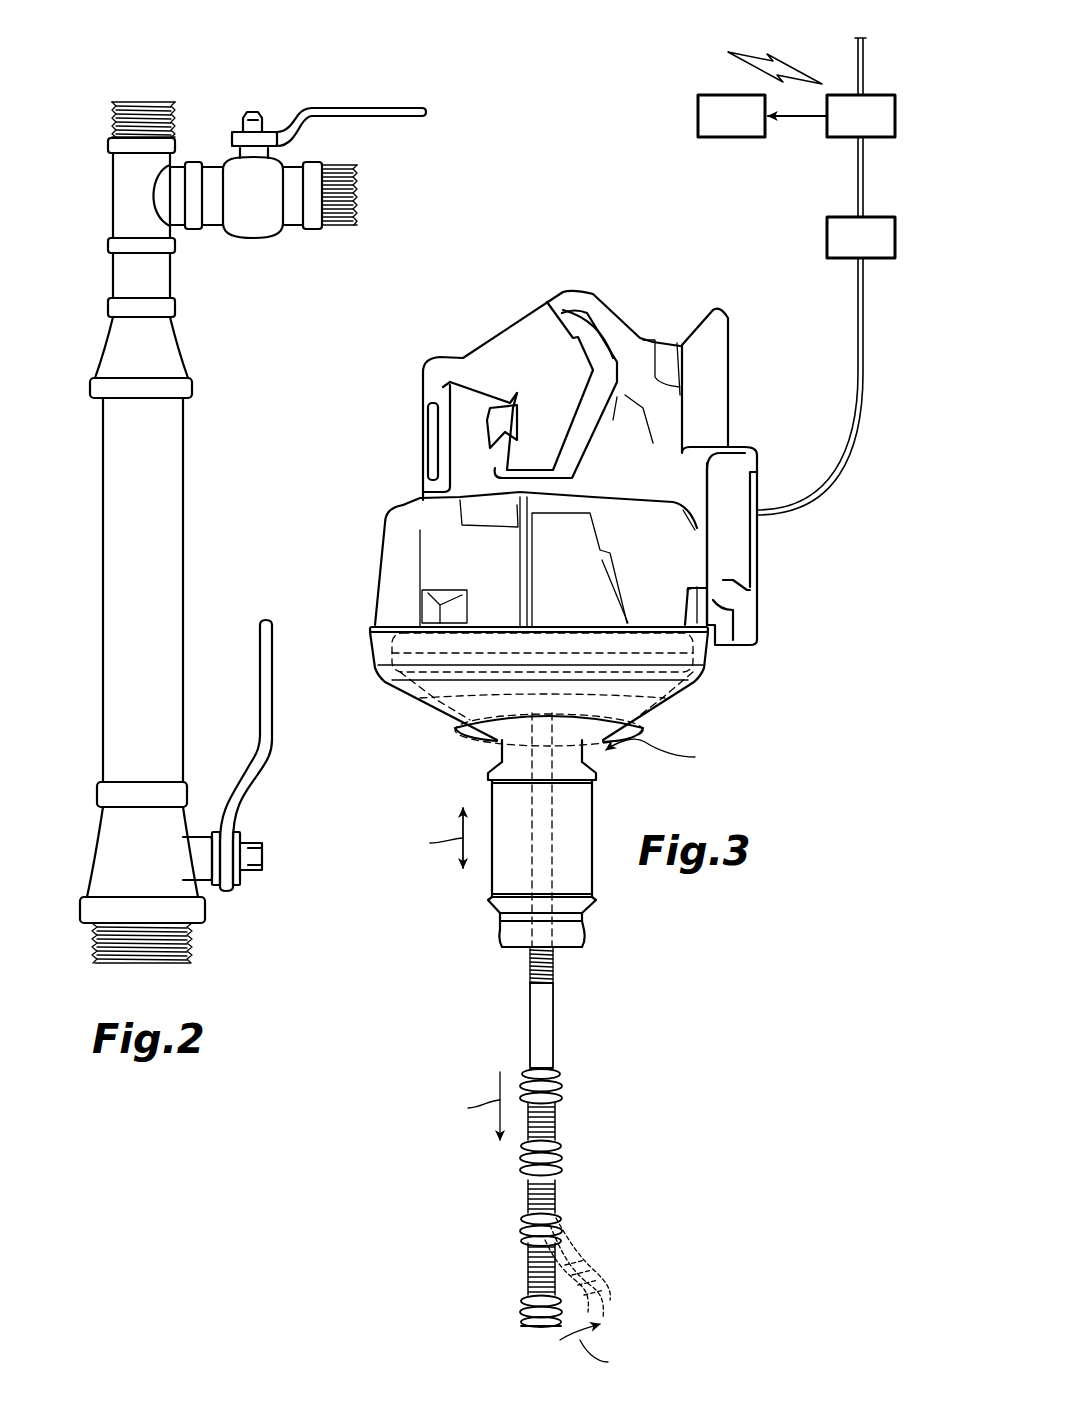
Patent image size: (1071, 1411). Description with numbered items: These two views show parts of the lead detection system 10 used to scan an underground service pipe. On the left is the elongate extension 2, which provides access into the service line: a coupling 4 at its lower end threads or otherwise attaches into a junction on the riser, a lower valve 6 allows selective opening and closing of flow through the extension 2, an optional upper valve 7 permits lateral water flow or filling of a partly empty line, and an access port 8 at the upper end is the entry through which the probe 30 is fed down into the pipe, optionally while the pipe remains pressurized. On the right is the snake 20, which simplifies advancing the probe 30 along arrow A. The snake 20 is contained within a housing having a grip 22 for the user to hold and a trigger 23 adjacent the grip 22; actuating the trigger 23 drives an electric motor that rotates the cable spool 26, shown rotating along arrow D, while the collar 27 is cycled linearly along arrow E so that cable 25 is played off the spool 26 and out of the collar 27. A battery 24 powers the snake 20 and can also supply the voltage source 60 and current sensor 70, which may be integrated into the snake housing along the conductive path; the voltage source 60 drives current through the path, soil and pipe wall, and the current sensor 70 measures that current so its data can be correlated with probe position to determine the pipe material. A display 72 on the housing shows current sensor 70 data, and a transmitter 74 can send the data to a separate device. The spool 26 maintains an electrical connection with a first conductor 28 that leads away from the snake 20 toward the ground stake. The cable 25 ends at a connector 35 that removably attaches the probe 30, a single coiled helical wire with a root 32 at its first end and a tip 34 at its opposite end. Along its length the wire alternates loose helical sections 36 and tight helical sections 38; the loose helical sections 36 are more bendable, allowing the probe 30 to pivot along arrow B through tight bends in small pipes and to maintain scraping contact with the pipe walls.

In FIG. 2, the extension 2 is at (80, 564).
In FIG. 2, the coupling 4 is at (123, 963).
In FIG. 2, the lower valve 6 is at (245, 800).
In FIG. 2, the upper valve 7 is at (291, 130).
In FIG. 2, the access port 8 is at (140, 102).
In FIG. 3, the system 10 is at (638, 176).
In FIG. 3, the snake 20 is at (396, 450).
In FIG. 3, the grip 22 is at (525, 322).
In FIG. 3, the trigger 23 is at (497, 417).
In FIG. 3, the battery 24 is at (707, 325).
In FIG. 3, the cable 25 is at (647, 697).
In FIG. 3, the spool 26 is at (385, 653).
In FIG. 3, the collar 27 is at (587, 883).
In FIG. 3, the first conductor 28 is at (863, 64).
In FIG. 3, the probe 30 is at (510, 1211).
In FIG. 3, the root 32 is at (556, 1078).
In FIG. 3, the tip 34 is at (538, 1324).
In FIG. 3, the connector 35 is at (530, 1013).
In FIG. 3, the loose helical sections 36 is at (573, 1092).
In FIG. 3, the tight helical sections 38 is at (558, 1120).
In FIG. 3, the voltage source 60 is at (861, 237).
In FIG. 3, the current sensor 70 is at (831, 116).
In FIG. 3, the display 72 is at (731, 116).
In FIG. 3, the transmitter 74 is at (787, 66).